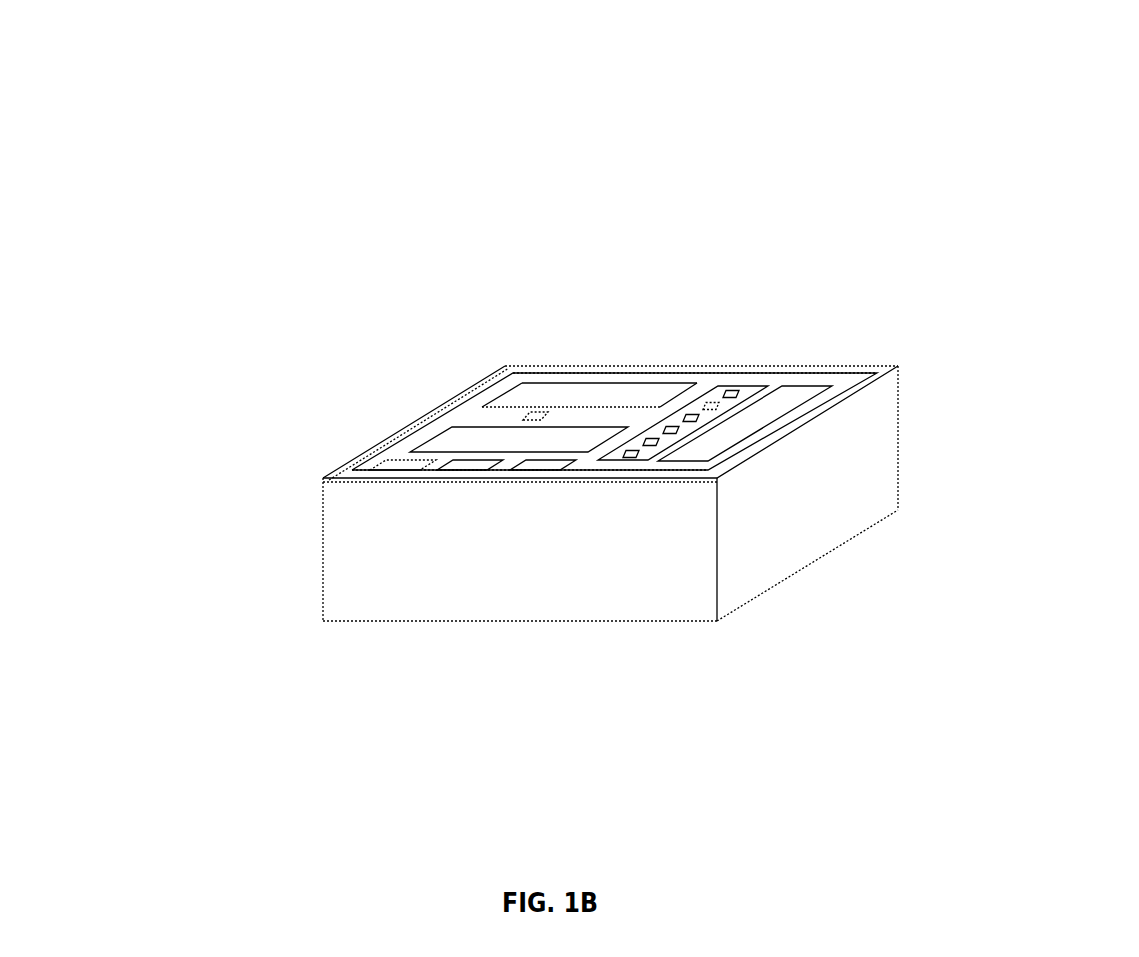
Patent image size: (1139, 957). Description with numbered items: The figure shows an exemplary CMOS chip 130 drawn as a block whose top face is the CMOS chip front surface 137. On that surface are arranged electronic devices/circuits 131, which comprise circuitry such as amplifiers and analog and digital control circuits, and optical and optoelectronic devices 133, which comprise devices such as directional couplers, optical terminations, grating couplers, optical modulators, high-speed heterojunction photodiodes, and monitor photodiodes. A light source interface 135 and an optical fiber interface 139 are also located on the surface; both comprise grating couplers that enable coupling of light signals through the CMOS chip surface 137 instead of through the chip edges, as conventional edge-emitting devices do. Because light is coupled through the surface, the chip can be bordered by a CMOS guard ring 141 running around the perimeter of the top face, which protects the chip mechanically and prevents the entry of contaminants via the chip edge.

The CMOS chip 130 is at (165, 88).
The electronic devices/circuits 131 is at (930, 326).
The optical and optoelectronic devices 133 is at (493, 387).
The light source interface 135 is at (550, 301).
The CMOS chip front surface 137 is at (695, 280).
The optical fiber interface 139 is at (738, 369).
The CMOS guard ring 141 is at (900, 390).